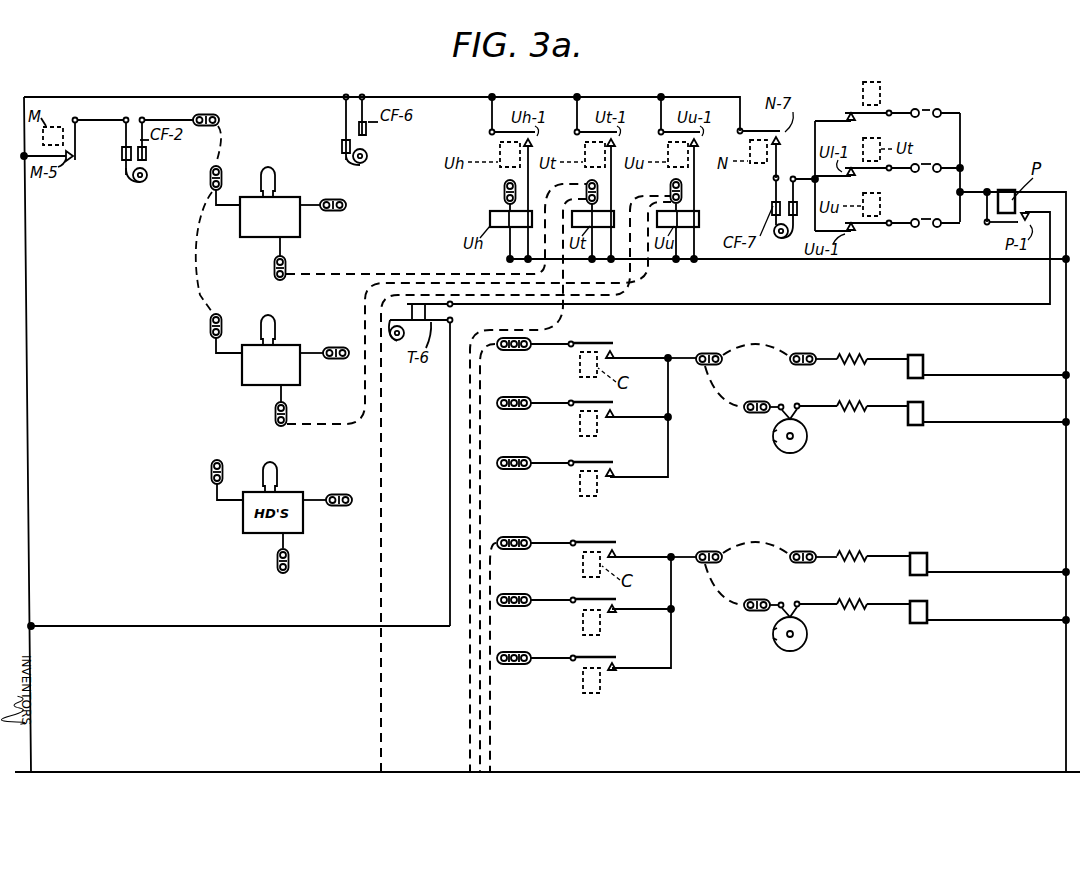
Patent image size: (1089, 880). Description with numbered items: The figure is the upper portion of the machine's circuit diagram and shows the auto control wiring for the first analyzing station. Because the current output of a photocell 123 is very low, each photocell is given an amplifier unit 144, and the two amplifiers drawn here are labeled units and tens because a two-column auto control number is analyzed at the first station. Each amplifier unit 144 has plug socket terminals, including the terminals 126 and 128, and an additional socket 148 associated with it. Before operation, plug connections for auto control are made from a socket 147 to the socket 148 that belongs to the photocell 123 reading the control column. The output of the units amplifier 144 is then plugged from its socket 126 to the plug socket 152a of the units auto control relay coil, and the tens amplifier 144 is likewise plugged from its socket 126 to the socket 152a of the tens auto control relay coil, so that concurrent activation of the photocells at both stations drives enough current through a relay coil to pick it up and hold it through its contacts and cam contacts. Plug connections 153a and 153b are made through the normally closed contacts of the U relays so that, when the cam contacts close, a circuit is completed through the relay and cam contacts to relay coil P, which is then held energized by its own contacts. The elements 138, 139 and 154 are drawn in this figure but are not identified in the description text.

The photocell 123 is at (275, 182).
The plug socket terminal 126 is at (274, 274).
The plug socket terminal 128 is at (339, 204).
The lamp 138 is at (924, 368).
The lamp 139 is at (924, 415).
The amplifier unit 144 is at (240, 232).
The socket 147 is at (218, 120).
The socket 148 is at (208, 180).
The plug socket of relay coil 152a is at (599, 190).
The plug connection 153a is at (930, 218).
The plug connection 153b is at (928, 162).
The contact 154 is at (514, 350).